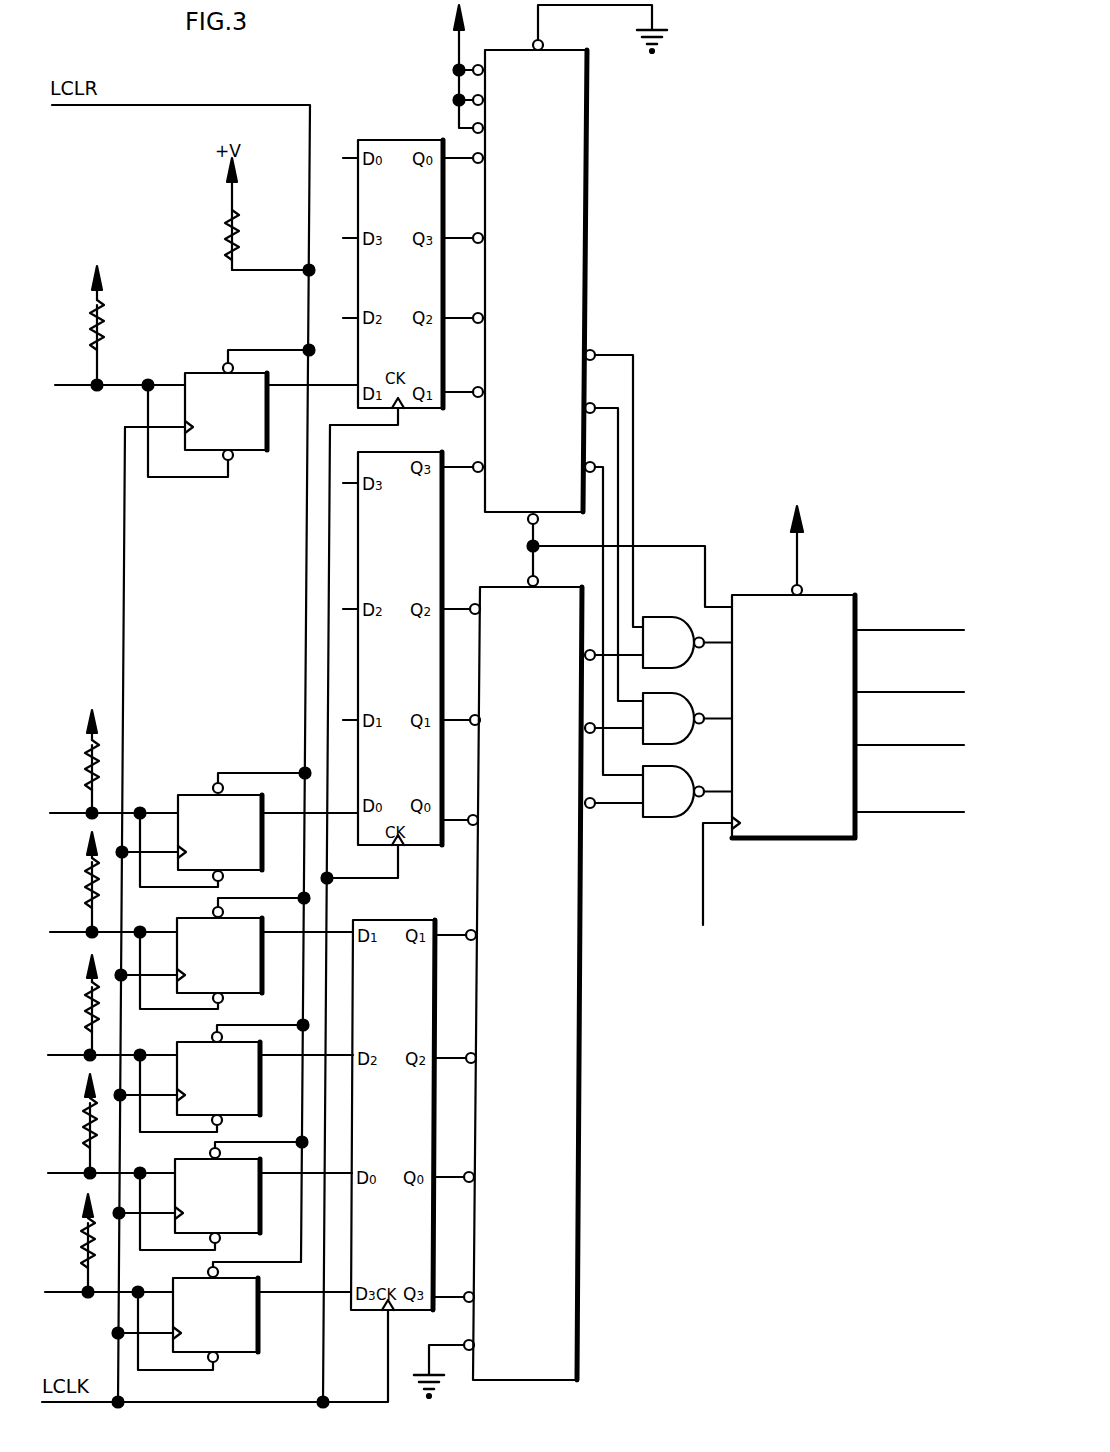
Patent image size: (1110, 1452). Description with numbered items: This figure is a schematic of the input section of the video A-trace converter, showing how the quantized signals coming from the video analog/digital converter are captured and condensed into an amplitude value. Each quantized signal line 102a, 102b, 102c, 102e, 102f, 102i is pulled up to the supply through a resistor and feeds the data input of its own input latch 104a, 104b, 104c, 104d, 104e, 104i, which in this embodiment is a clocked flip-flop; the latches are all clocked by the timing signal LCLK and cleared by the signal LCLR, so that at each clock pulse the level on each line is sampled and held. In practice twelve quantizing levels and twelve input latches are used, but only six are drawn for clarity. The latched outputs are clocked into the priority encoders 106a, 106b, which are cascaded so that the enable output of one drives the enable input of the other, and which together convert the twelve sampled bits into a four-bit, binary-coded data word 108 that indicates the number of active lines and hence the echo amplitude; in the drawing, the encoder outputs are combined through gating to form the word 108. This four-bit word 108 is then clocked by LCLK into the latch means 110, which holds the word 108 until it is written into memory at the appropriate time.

The quantized signal line 102a is at (66, 1294).
The quantized signal line 102b is at (68, 1172).
The quantized signal line 102c is at (70, 1054).
The quantized signal line 102e is at (70, 931).
The quantized signal line 102f is at (68, 812).
The quantized signal line 102i is at (72, 383).
The input latch 104a is at (245, 1340).
The input latch 104b is at (192, 1158).
The input latch 104c is at (194, 1040).
The input latch 104d is at (195, 915).
The input latch 104e is at (190, 792).
The input latch 104i is at (247, 452).
The priority encoder 106a is at (580, 975).
The priority encoder 106b is at (587, 285).
The four-bit binary-coded data word 108 is at (722, 516).
The latch means 110 is at (785, 840).